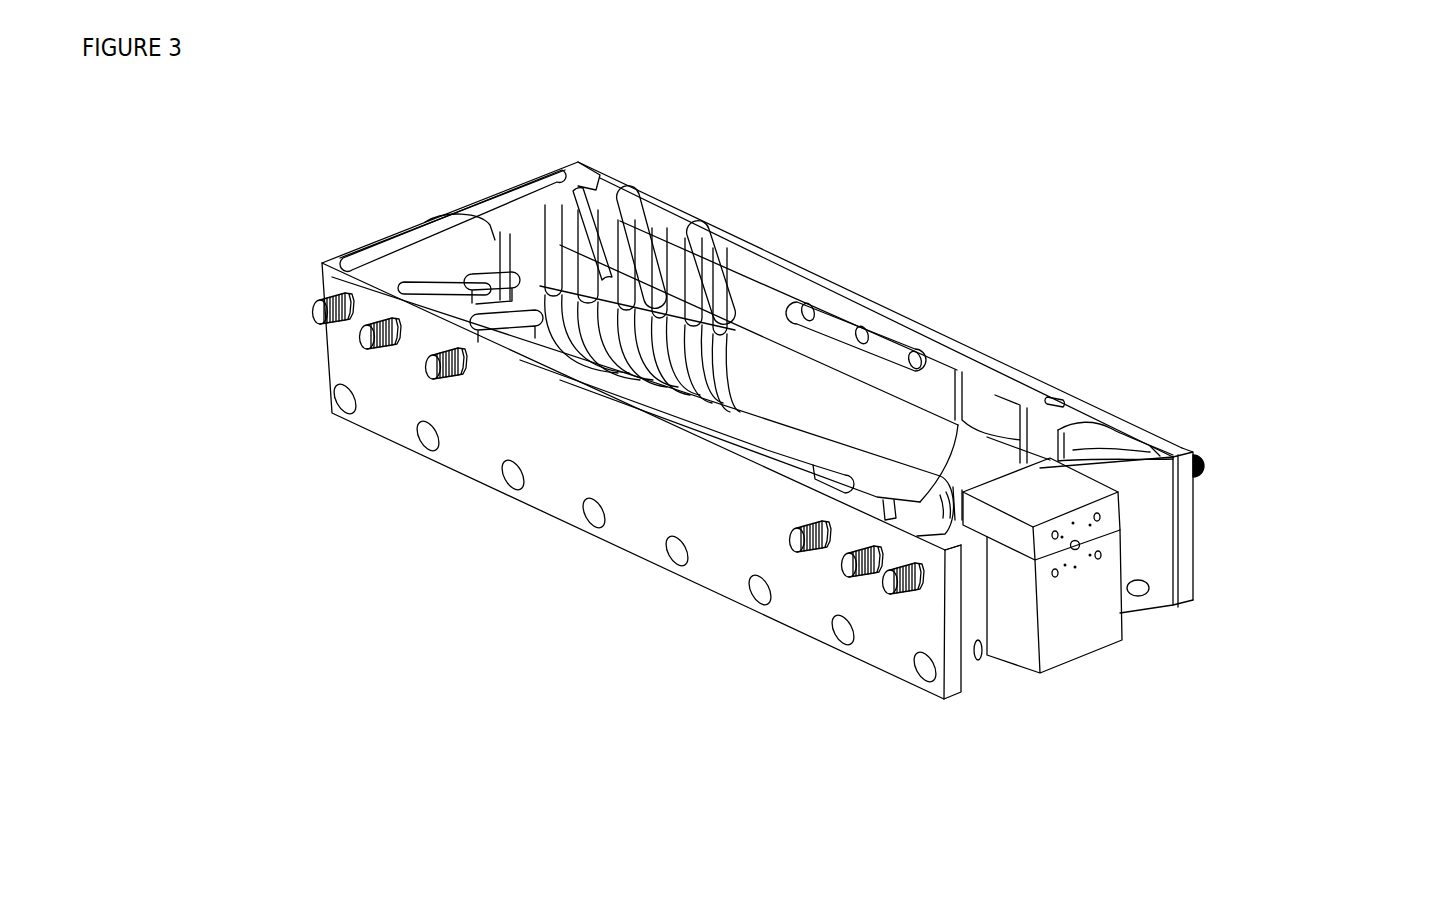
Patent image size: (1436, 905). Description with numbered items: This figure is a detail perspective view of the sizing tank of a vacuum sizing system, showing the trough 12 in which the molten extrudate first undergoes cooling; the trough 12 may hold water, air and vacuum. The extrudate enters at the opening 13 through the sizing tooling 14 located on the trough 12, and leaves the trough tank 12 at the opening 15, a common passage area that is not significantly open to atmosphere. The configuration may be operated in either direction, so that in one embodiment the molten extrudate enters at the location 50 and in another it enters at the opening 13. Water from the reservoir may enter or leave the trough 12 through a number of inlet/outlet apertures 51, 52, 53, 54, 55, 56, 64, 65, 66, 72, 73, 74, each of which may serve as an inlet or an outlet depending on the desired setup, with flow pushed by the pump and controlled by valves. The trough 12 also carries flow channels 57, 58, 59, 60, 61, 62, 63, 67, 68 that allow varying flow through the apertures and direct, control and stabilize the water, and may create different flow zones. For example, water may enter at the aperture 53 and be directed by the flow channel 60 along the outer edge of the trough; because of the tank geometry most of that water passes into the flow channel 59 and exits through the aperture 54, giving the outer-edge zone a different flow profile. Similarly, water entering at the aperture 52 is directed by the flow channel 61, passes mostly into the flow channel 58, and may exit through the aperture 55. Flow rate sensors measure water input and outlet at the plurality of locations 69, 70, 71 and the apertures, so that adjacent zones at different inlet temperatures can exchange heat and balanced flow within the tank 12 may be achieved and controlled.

The trough 12 is at (1082, 137).
The opening 13 is at (1079, 550).
The sizing tooling 14 is at (1124, 536).
The opening 15 is at (440, 217).
The entry location 50 is at (412, 220).
The inlet/outlet aperture 51 is at (880, 600).
The inlet/outlet aperture 52 is at (840, 583).
The inlet/outlet aperture 53 is at (791, 555).
The inlet/outlet aperture 54 is at (422, 383).
The inlet/outlet aperture 55 is at (362, 355).
The inlet/outlet aperture 56 is at (317, 326).
The flow channel 57 is at (468, 280).
The flow channel 58 is at (507, 311).
The flow channel 59 is at (535, 334).
The flow channel 60 is at (813, 476).
The flow channel 61 is at (882, 499).
The flow channel 62 is at (947, 552).
The flow channel 63 is at (1175, 447).
The inlet/outlet aperture 64 is at (1128, 422).
The inlet/outlet aperture 65 is at (1070, 394).
The inlet/outlet aperture 66 is at (1212, 456).
The flow channel 67 is at (1160, 430).
The flow channel 68 is at (1107, 407).
The water inlet/outlet location 69 is at (753, 237).
The water inlet/outlet location 70 is at (673, 206).
The water inlet/outlet location 71 is at (626, 187).
The inlet/outlet aperture 72 is at (720, 238).
The inlet/outlet aperture 73 is at (650, 217).
The inlet/outlet aperture 74 is at (592, 171).